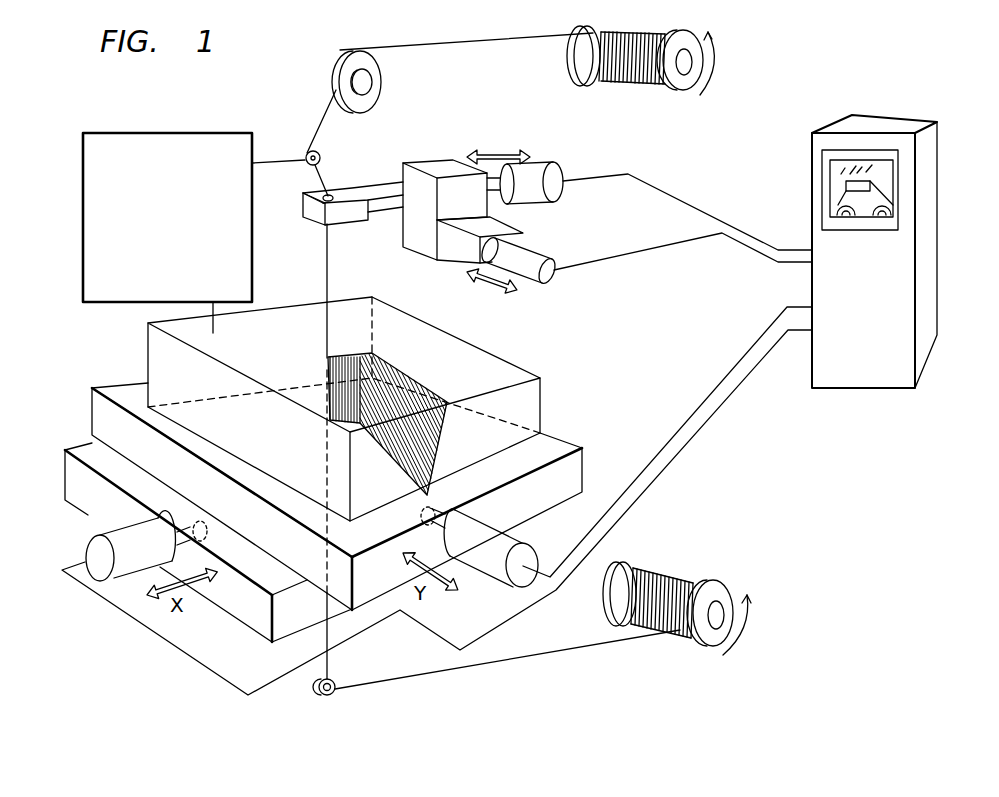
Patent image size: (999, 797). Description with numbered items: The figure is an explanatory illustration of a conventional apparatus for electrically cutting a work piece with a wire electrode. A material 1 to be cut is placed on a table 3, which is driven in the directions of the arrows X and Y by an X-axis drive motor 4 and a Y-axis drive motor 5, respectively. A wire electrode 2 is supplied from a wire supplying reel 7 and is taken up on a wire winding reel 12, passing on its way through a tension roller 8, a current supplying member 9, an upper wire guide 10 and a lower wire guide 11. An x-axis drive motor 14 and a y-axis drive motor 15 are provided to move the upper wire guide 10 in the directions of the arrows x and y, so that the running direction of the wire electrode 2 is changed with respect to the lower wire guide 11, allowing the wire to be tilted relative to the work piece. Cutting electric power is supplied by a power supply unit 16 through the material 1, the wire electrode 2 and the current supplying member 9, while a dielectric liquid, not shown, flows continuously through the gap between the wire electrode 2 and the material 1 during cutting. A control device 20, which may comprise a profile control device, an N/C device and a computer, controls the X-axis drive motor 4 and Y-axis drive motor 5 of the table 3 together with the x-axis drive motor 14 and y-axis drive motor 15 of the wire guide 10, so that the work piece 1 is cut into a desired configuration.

The material to be cut 1 is at (511, 368).
The wire electrode 2 is at (326, 278).
The table 3 is at (557, 445).
The X-axis drive motor 4 is at (92, 542).
The Y-axis drive motor 5 is at (483, 560).
The wire supplying reel 7 is at (682, 88).
The tension roller 8 is at (380, 81).
The current supplying member 9 is at (321, 158).
The upper wire guide 10 is at (345, 217).
The lower wire guide 11 is at (334, 679).
The wire winding reel 12 is at (717, 588).
The x-axis drive motor 14 is at (543, 163).
The y-axis drive motor 15 is at (551, 280).
The power supply unit 16 is at (189, 133).
The control device 20 is at (928, 142).